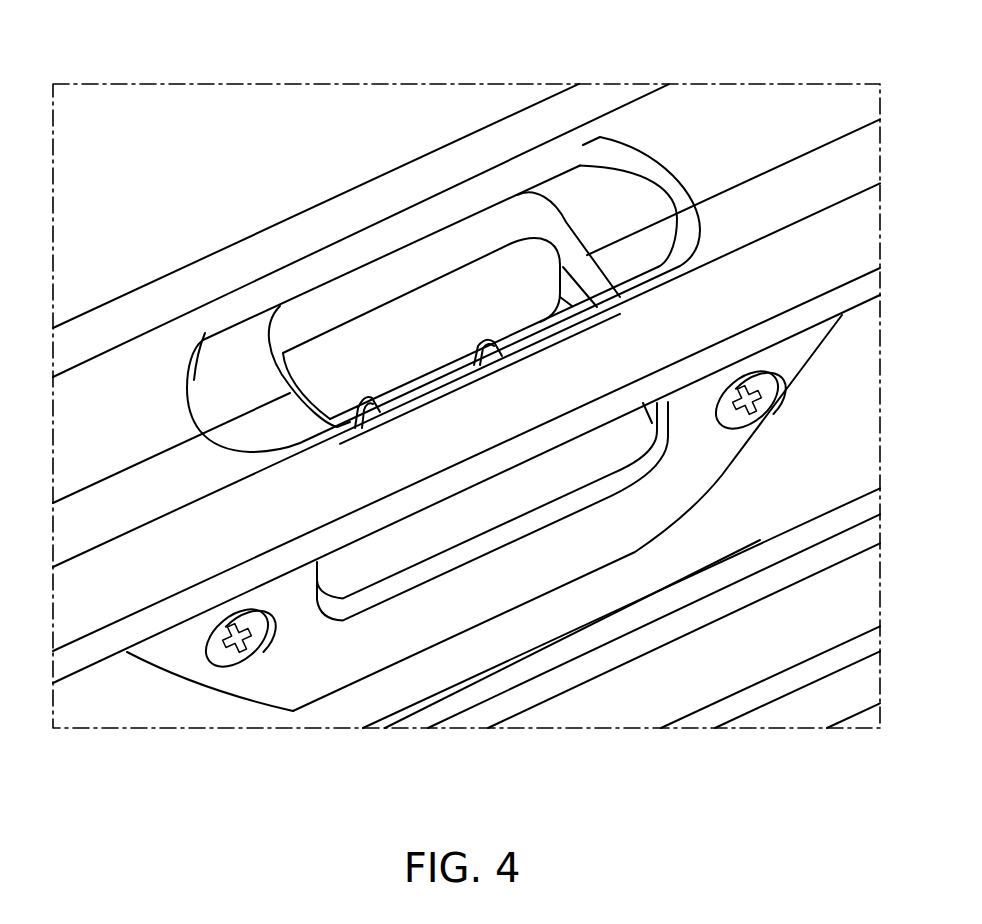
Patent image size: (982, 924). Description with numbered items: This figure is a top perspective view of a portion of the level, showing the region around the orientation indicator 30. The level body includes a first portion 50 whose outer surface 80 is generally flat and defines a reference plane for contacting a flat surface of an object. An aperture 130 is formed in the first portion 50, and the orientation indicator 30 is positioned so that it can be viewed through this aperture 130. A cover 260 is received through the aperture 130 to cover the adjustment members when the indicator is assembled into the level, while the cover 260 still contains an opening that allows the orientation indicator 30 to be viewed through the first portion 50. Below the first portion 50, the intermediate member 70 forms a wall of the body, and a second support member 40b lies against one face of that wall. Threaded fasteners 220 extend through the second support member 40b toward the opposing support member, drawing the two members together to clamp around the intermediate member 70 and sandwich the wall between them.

The orientation indicator 30 is at (447, 312).
The second support member 40b is at (432, 613).
The first portion 50 is at (694, 120).
The intermediate member 70 is at (128, 707).
The outer surface 80 is at (594, 100).
The aperture 130 is at (345, 268).
The threaded fasteners 220 is at (762, 388).
The cover 260 is at (235, 378).